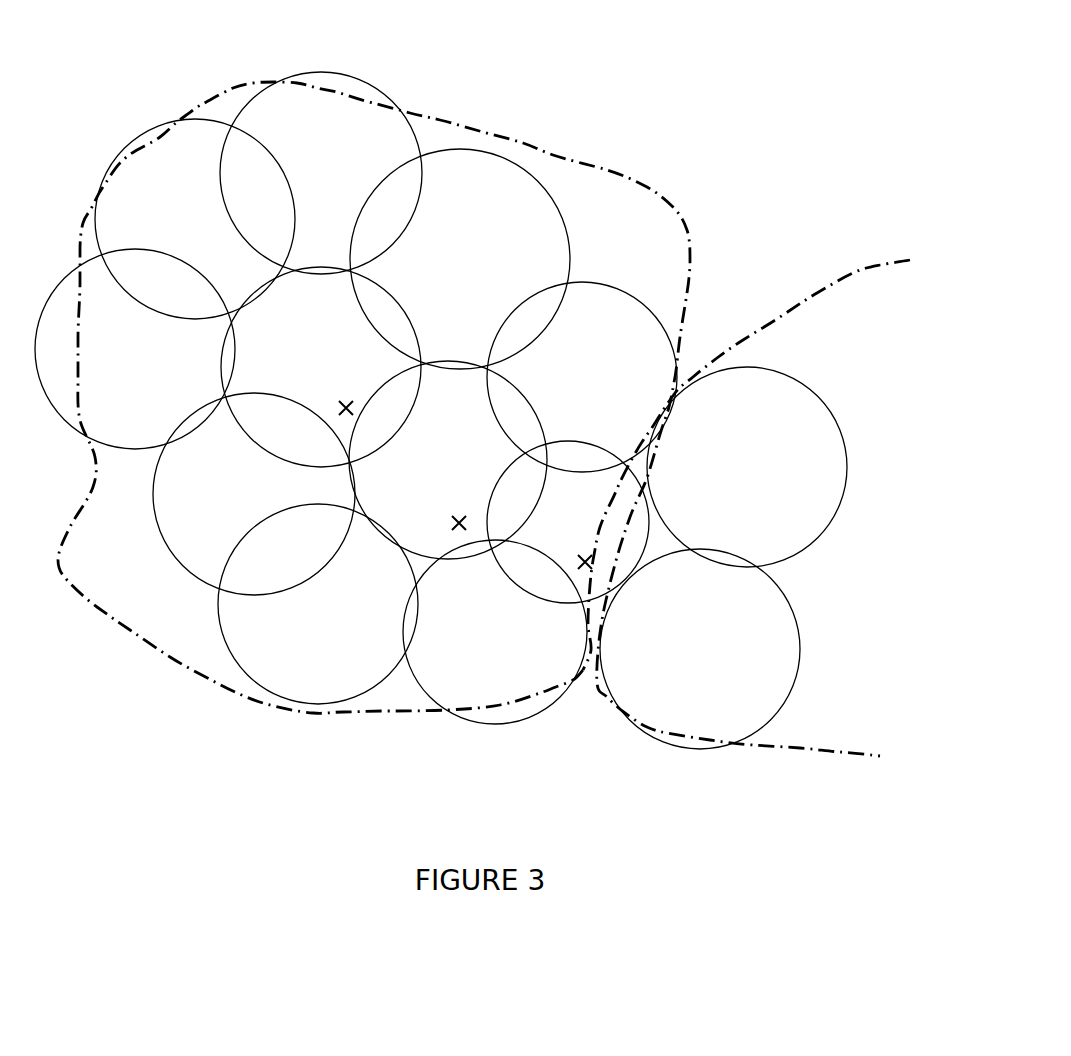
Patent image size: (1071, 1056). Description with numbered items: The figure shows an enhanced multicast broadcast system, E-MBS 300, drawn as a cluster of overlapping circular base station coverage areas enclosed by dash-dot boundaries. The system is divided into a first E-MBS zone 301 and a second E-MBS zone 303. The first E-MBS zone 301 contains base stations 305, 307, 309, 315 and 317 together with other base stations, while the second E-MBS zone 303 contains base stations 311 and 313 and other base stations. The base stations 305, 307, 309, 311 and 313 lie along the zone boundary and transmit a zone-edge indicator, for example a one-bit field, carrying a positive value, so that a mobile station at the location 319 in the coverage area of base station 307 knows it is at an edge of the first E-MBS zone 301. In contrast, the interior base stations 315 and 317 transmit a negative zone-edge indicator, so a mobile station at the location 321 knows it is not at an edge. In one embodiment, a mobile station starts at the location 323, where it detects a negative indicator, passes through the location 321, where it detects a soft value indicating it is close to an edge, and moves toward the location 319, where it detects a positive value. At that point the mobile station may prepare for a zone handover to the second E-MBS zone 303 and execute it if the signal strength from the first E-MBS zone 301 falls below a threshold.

The enhanced multicast broadcast system (E-MBS) 300 is at (633, 107).
The first E-MBS zone 301 is at (565, 157).
The second E-MBS zone 303 is at (753, 335).
The base station 305 is at (582, 377).
The base station 307 is at (568, 522).
The base station 309 is at (495, 632).
The base station 311 is at (747, 467).
The base station 313 is at (700, 649).
The base station 315 is at (448, 460).
The base station 317 is at (321, 367).
The location 319 is at (580, 565).
The location 321 is at (452, 523).
The location 323 is at (340, 409).